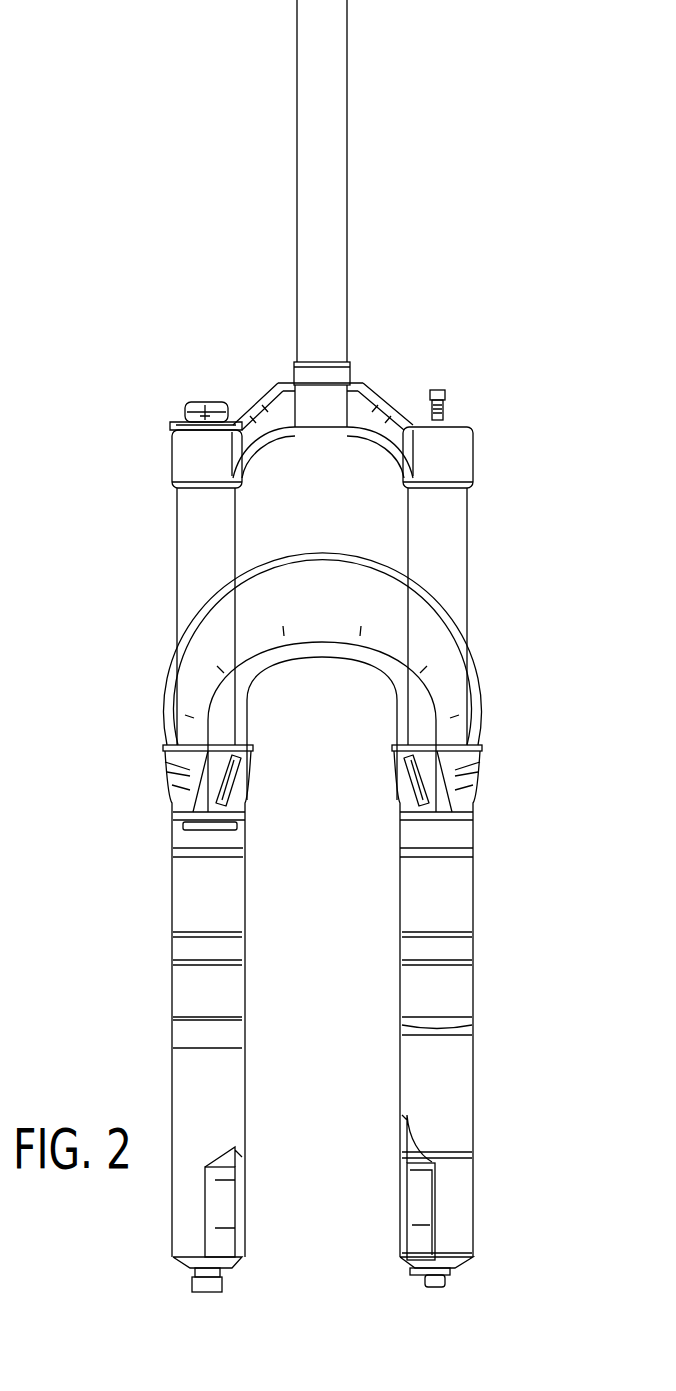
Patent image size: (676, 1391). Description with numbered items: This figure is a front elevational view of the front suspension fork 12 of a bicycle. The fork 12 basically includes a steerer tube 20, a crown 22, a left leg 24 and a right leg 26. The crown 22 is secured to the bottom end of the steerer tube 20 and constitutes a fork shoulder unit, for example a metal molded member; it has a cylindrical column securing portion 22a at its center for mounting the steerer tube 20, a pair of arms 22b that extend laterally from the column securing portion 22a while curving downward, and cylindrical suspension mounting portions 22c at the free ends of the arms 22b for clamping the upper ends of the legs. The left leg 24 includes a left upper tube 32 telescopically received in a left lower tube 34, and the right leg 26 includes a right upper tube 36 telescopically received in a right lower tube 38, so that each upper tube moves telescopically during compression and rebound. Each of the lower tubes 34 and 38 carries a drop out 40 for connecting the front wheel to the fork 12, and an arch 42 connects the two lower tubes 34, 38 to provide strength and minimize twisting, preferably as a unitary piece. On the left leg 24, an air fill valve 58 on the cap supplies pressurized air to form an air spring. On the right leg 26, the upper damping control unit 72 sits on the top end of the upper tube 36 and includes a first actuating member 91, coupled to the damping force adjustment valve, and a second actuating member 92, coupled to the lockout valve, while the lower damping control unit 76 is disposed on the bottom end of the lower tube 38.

The front suspension fork 12 is at (223, 215).
The steerer tube 20 is at (347, 104).
The crown 22 is at (383, 398).
The column securing portion 22a is at (323, 430).
The arms 22b is at (262, 447).
The suspension mounting portions 22c is at (172, 468).
The left leg 24 is at (553, 722).
The right leg 26 is at (82, 718).
The left upper tube 32 is at (469, 683).
The left lower tube 34 is at (471, 882).
The right upper tube 36 is at (178, 692).
The right lower tube 38 is at (177, 885).
The drop out 40 is at (235, 1210).
The arch 42 is at (318, 628).
The air fill valve 58 is at (444, 414).
The upper damping control unit 72 is at (177, 383).
The lower damping control unit 76 is at (182, 1283).
The first actuating member 91 is at (216, 405).
The second actuating member 92 is at (172, 422).